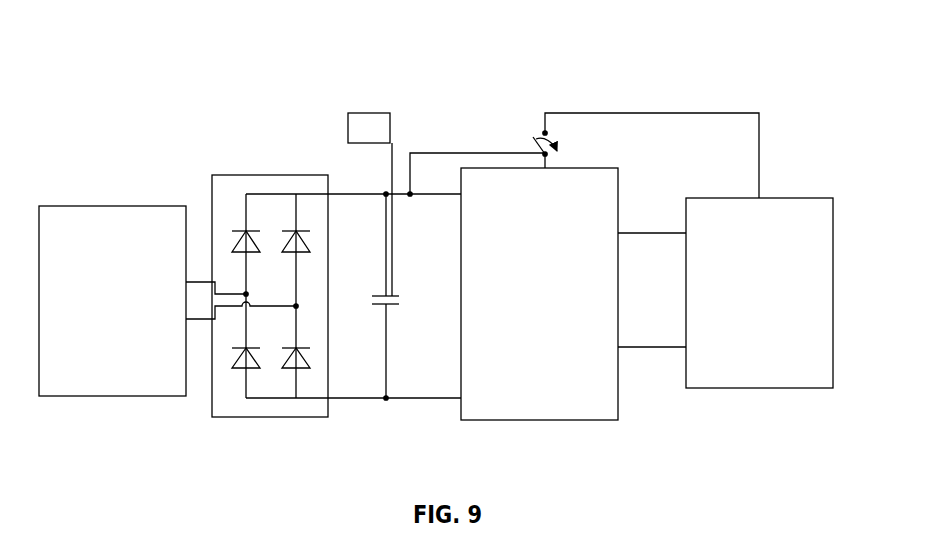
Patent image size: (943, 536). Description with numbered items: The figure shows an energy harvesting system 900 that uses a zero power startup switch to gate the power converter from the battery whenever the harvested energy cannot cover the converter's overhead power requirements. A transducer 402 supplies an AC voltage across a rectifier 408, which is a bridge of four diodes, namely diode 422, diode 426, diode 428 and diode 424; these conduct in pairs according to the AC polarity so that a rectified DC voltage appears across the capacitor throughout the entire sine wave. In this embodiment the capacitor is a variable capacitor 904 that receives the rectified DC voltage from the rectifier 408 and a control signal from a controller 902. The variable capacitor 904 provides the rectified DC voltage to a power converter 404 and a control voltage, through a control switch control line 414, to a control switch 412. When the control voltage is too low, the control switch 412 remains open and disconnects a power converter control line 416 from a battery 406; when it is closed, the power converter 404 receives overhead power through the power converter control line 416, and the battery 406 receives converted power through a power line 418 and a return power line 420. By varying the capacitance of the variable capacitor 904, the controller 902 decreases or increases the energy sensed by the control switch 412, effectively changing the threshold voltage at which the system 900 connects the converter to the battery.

The energy harvesting system 900 is at (160, 77).
The transducer 402 is at (98, 206).
The rectifier 408 is at (280, 299).
The diode 422 is at (231, 242).
The diode 426 is at (309, 248).
The diode 428 is at (232, 362).
The diode 424 is at (310, 362).
The controller 902 is at (367, 113).
The variable capacitor 904 is at (372, 305).
The control switch control line 414 is at (430, 152).
The control switch 412 is at (538, 127).
The power converter control line 416 is at (660, 112).
The power converter 404 is at (588, 168).
The power line 418 is at (646, 232).
The return power line 420 is at (650, 349).
The battery 406 is at (775, 198).